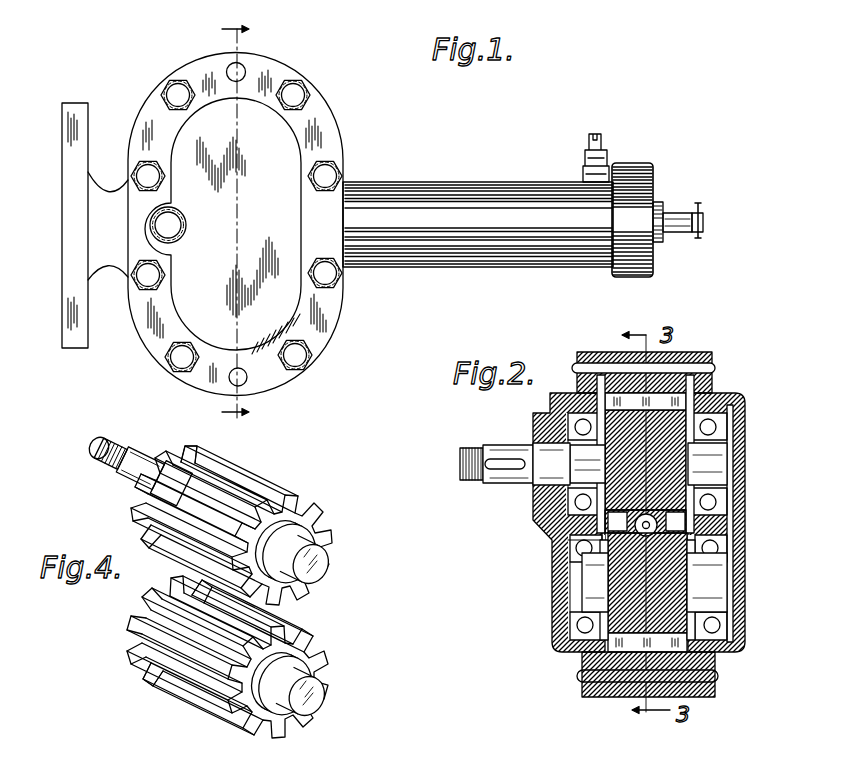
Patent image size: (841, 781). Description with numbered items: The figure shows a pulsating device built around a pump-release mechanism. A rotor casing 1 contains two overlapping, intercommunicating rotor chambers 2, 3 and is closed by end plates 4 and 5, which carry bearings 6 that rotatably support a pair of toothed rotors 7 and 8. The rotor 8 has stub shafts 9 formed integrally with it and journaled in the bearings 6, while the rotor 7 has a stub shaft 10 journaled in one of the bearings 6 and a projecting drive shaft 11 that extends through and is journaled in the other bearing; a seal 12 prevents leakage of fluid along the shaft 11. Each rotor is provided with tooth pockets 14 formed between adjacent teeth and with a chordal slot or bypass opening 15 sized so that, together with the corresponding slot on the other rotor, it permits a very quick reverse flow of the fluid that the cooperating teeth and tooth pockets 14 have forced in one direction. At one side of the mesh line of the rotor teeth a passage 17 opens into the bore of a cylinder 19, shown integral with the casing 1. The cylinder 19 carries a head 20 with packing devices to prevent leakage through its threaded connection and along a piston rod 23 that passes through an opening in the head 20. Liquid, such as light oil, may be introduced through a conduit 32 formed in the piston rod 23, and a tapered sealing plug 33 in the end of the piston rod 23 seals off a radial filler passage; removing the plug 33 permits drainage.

In FIG. 1, the rotor casing 1 is at (328, 100).
In FIG. 2, the rotor chamber 2 is at (703, 353).
In FIG. 2, the rotor chamber 3 is at (627, 652).
In FIG. 1, the end plate 4 is at (278, 317).
In FIG. 2, the end plate 4 is at (744, 453).
In FIG. 2, the end plate 5 is at (552, 578).
In FIG. 2, the bearings 6 is at (565, 518).
In FIG. 2, the rotor 7 is at (690, 412).
In FIG. 4, the rotor 7 is at (288, 483).
In FIG. 2, the rotor 8 is at (603, 633).
In FIG. 4, the rotor 8 is at (223, 715).
In FIG. 2, the stub shafts 9 is at (710, 588).
In FIG. 4, the stub shafts 9 is at (311, 698).
In FIG. 2, the stub shaft 10 is at (710, 455).
In FIG. 4, the stub shaft 10 is at (313, 567).
In FIG. 2, the drive shaft 11 is at (522, 450).
In FIG. 4, the drive shaft 11 is at (148, 453).
In FIG. 2, the seal 12 is at (550, 487).
In FIG. 2, the tooth pockets 14 is at (612, 373).
In FIG. 4, the tooth pockets 14 is at (217, 455).
In FIG. 2, the bypass opening 15 is at (668, 528).
In FIG. 4, the bypass opening 15 is at (205, 583).
In FIG. 2, the passage 17 is at (632, 527).
In FIG. 1, the cylinder 19 is at (462, 185).
In FIG. 1, the head 20 is at (635, 172).
In FIG. 1, the piston rod 23 is at (682, 227).
In FIG. 2, the conduit 32 is at (607, 563).
In FIG. 1, the tapered sealing plug 33 is at (704, 218).